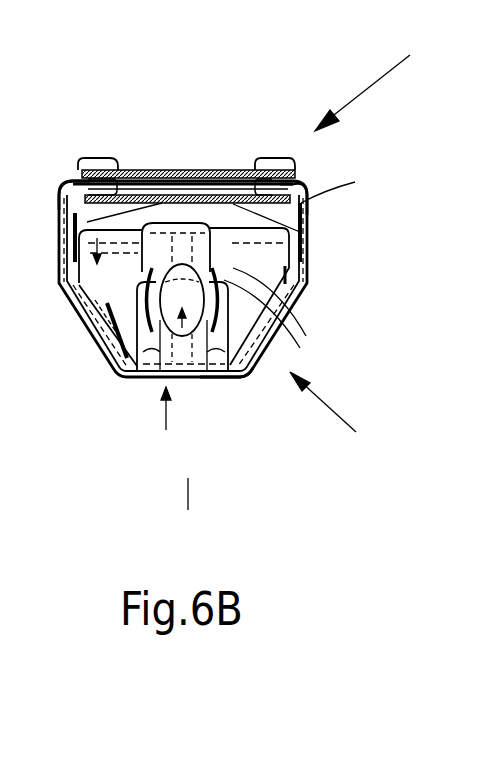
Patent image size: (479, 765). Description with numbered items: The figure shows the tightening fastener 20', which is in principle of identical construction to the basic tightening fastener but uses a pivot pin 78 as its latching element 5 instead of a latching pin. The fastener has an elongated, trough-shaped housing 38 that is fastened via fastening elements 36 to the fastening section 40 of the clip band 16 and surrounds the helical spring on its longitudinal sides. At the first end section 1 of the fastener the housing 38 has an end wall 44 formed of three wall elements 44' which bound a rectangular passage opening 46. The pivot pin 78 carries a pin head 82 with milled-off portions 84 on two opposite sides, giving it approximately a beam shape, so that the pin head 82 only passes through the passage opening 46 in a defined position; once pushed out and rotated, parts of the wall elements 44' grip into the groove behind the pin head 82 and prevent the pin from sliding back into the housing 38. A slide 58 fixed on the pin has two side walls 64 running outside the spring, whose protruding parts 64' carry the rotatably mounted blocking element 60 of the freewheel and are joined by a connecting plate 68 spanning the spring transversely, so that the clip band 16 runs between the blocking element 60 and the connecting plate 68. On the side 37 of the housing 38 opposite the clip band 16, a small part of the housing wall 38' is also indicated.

The first end section 1 is at (328, 419).
The latching element 5 is at (177, 496).
The clip band 16 is at (300, 178).
The tightening fastener 20' is at (385, 79).
The fastening elements 36 is at (94, 158).
The side of the housing 37 is at (166, 423).
The housing 38 is at (221, 279).
The housing wall 38' is at (251, 406).
The fastening section 40 is at (197, 168).
The end wall 44 is at (233, 284).
The wall elements 44' is at (289, 317).
The passage opening 46 is at (140, 286).
The slide 58 is at (60, 172).
The blocking element 60 is at (141, 195).
The side walls 64 is at (192, 291).
The protruding parts of the side walls 64' is at (226, 268).
The connecting plate 68 is at (165, 181).
The pivot pin 78 is at (183, 377).
The pin head 82 is at (153, 377).
The milled-off portions 84 is at (97, 315).